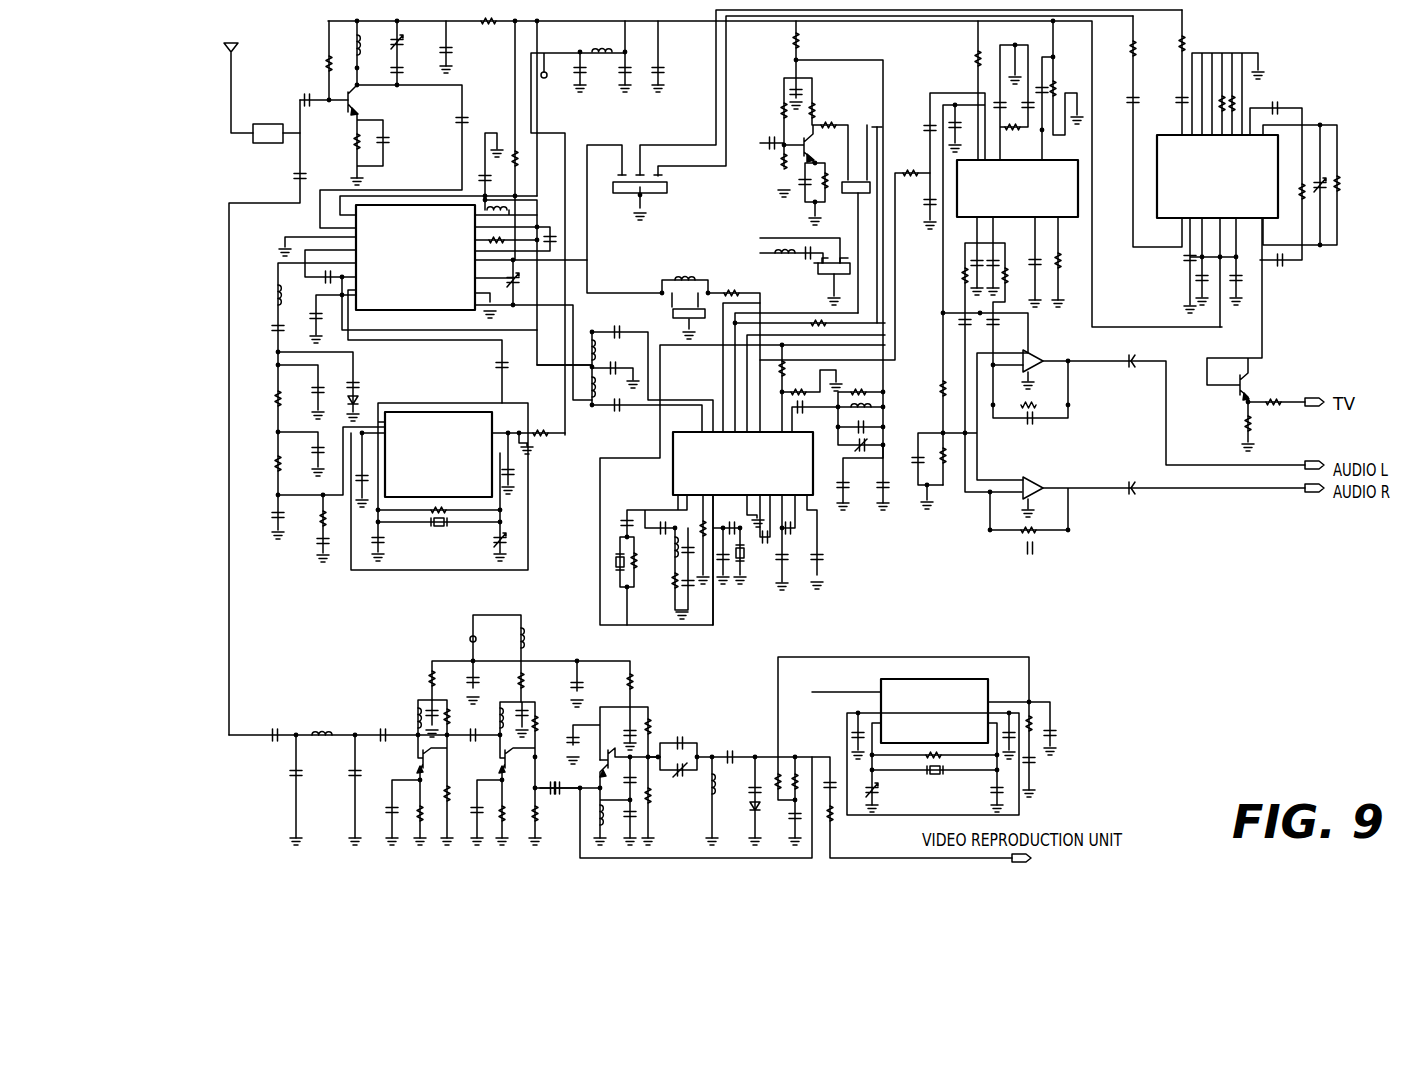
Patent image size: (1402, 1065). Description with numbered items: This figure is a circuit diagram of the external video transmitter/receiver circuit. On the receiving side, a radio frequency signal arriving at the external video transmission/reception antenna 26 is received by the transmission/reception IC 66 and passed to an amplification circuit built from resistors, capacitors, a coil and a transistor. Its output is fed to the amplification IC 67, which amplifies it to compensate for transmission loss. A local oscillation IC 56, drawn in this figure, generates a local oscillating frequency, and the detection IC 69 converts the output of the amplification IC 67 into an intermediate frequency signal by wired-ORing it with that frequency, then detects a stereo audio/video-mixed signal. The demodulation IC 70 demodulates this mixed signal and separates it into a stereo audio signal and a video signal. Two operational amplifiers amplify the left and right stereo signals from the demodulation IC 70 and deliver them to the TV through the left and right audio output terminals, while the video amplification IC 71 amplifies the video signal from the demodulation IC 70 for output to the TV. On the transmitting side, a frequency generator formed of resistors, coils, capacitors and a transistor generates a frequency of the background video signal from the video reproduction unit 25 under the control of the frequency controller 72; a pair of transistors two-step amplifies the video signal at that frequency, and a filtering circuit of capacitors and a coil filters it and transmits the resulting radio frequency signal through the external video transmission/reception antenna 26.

The video reproduction unit 25 is at (193, 458).
The external video transmission/reception antenna 26 is at (212, 57).
The local oscillation IC 56 is at (428, 412).
The transmission/reception IC 66 is at (262, 143).
The amplification IC 67 is at (400, 205).
The detection IC 69 is at (813, 482).
The demodulation IC 70 is at (1078, 207).
The video amplification IC 71 is at (1157, 161).
The frequency controller 72 is at (918, 679).